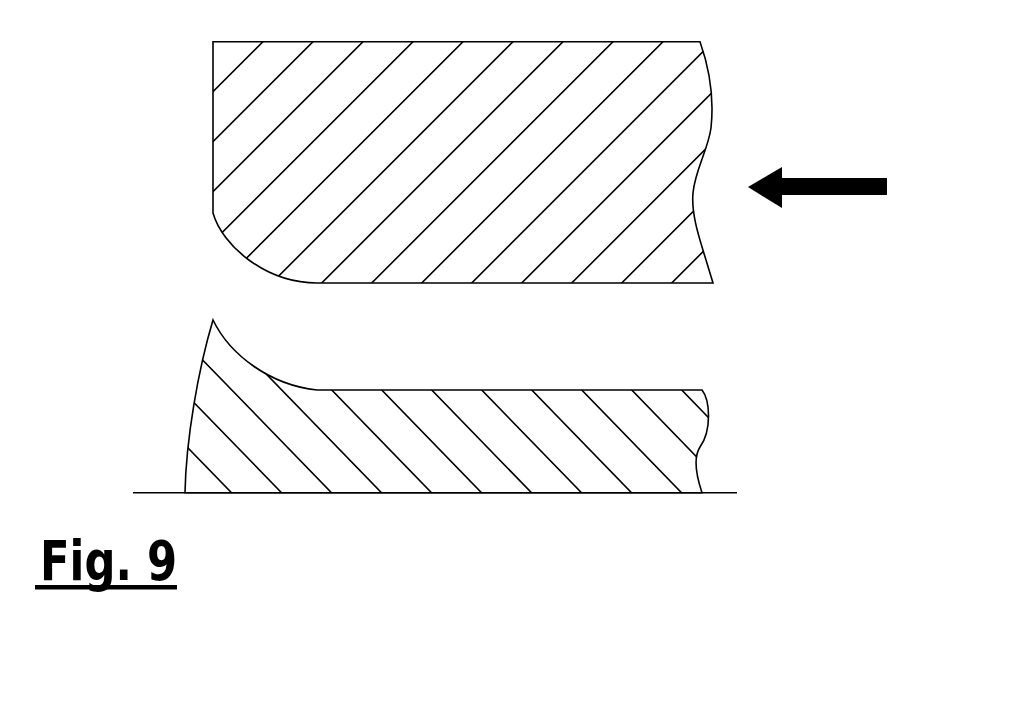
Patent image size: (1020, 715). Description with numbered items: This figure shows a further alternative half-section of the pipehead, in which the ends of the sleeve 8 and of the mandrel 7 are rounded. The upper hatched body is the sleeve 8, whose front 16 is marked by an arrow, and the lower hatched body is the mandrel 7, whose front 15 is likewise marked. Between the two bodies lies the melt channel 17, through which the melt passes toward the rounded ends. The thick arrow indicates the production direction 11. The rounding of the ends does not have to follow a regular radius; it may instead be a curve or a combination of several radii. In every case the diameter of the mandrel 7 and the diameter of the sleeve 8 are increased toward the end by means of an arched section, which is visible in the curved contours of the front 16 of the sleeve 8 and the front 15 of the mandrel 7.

The front of sleeve 16 is at (165, 150).
The sleeve 8 is at (550, 100).
The front of mandrel 15 is at (152, 383).
The mandrel 7 is at (625, 452).
The melt channel 17 is at (575, 328).
The production direction 11 is at (812, 178).